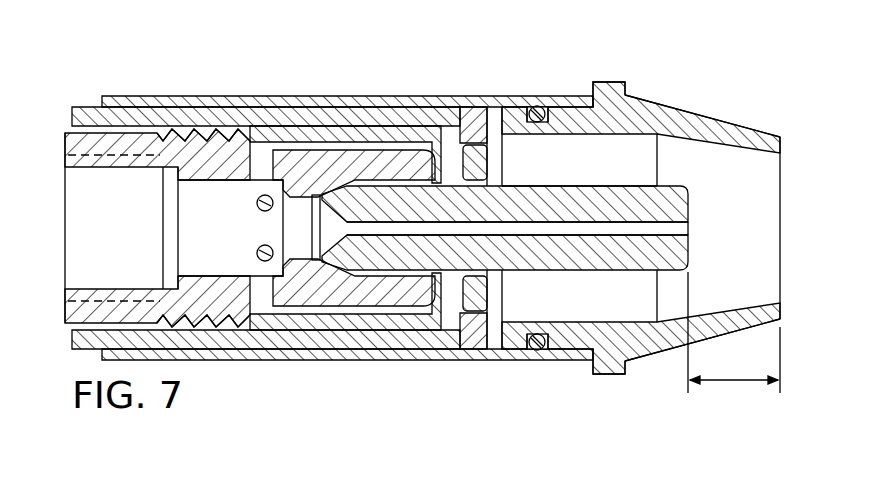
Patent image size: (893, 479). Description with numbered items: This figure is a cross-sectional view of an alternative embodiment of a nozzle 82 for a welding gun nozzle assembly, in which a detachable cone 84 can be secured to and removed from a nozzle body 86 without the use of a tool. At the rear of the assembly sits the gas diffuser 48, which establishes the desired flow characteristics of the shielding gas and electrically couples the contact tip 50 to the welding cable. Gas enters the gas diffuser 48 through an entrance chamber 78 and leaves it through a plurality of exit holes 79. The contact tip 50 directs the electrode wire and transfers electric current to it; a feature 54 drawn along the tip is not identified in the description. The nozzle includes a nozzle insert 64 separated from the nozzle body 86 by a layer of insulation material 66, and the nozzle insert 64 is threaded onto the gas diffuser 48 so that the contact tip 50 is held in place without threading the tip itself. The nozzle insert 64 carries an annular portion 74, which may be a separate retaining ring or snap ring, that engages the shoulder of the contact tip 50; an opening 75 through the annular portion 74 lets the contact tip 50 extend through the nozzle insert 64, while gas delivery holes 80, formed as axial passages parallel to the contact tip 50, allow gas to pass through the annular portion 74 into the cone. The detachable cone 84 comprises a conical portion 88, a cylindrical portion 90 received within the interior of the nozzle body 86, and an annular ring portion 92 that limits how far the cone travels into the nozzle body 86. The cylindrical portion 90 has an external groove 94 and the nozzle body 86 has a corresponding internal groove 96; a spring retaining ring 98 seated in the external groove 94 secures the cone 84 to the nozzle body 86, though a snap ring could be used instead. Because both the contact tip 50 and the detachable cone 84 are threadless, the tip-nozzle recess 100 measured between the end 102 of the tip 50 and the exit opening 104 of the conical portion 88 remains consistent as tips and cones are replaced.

The gas diffuser 48 is at (65, 150).
The contact tip 50 is at (686, 187).
The central bore 54 is at (688, 223).
The nozzle insert 64 is at (282, 133).
The layer of insulation material 66 is at (180, 115).
The annular portion 74 is at (465, 170).
The opening 75 is at (453, 270).
The entrance chamber 78 is at (222, 238).
The exit holes 79 is at (260, 258).
The gas delivery holes 80 is at (475, 105).
The nozzle 82 is at (124, 92).
The detachable cone 84 is at (723, 113).
The nozzle body 86 is at (210, 97).
The conical portion 88 is at (648, 101).
The cylindrical portion 90 is at (490, 115).
The annular ring portion 92 is at (608, 82).
The external groove 94 is at (558, 111).
The internal groove 96 is at (534, 105).
The spring retaining ring 98 is at (547, 105).
The tip-nozzle recess 100 is at (733, 383).
The end of the tip 102 is at (688, 242).
The exit opening 104 is at (780, 252).